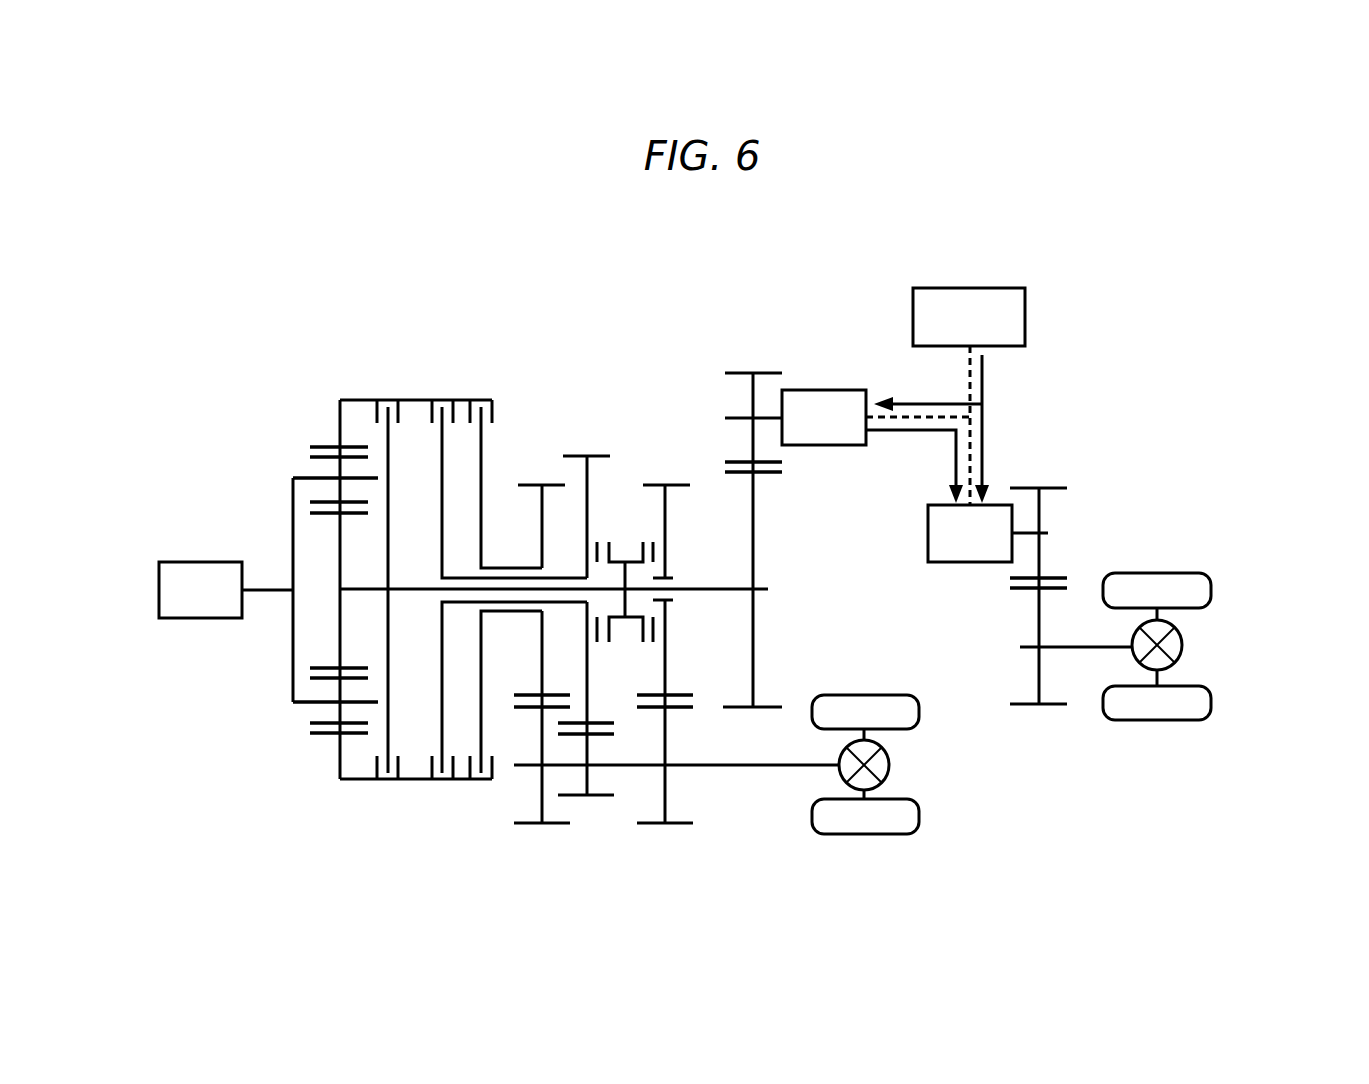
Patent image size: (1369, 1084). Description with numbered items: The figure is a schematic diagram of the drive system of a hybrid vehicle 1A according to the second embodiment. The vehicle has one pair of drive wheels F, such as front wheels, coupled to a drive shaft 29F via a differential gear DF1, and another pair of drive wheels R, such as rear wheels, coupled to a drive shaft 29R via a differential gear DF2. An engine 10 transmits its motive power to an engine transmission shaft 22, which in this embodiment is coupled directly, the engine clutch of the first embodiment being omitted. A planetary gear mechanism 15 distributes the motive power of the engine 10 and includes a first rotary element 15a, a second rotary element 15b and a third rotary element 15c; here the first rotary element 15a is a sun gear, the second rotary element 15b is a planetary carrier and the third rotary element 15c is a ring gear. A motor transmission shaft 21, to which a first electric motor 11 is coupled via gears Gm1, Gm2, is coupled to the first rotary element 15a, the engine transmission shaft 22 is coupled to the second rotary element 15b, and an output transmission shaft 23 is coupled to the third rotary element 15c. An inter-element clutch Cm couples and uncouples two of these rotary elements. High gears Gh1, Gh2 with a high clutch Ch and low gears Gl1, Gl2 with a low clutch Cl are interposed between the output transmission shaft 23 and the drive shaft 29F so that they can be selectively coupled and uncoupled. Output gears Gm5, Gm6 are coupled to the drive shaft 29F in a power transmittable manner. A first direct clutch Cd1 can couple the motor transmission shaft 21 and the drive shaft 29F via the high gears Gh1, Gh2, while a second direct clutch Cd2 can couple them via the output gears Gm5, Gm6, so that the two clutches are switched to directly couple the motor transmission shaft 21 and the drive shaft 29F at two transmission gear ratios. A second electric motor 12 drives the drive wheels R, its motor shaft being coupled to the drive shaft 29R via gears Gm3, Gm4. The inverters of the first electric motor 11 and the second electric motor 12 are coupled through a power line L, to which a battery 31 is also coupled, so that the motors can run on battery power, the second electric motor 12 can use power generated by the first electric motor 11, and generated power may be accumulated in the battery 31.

The hybrid vehicle 1A is at (768, 242).
The engine 10 is at (193, 562).
The first electric motor 11 is at (817, 388).
The second electric motor 12 is at (952, 562).
The planetary gear mechanism 15 is at (354, 563).
The first rotary element 15a is at (332, 442).
The second rotary element 15b is at (332, 477).
The third rotary element 15c is at (339, 518).
The motor transmission shaft 21 is at (720, 592).
The engine transmission shaft 22 is at (285, 595).
The output transmission shaft 23 is at (417, 782).
The drive shaft 29F is at (762, 767).
The drive shaft 29R is at (1068, 653).
The battery 31 is at (1007, 287).
The inter-element clutch Cm is at (387, 573).
The high clutch Ch is at (508, 573).
The low clutch Cl is at (505, 573).
The first direct clutch Cd1 is at (607, 537).
The second direct clutch Cd2 is at (648, 535).
The low gear Gl1 is at (537, 483).
The high gear Gh1 is at (580, 455).
The output gear Gm5 is at (663, 482).
The low gear Gl2 is at (540, 825).
The high gear Gh2 is at (595, 798).
The output gear Gm6 is at (688, 826).
The gear Gm1 is at (735, 372).
The gear Gm2 is at (772, 475).
The gear Gm3 is at (1062, 485).
The gear Gm4 is at (1018, 590).
The differential gear DF1 is at (892, 757).
The differential gear DF2 is at (1183, 643).
The drive wheels F is at (890, 695).
The drive wheels R is at (1188, 572).
The power line L is at (975, 447).